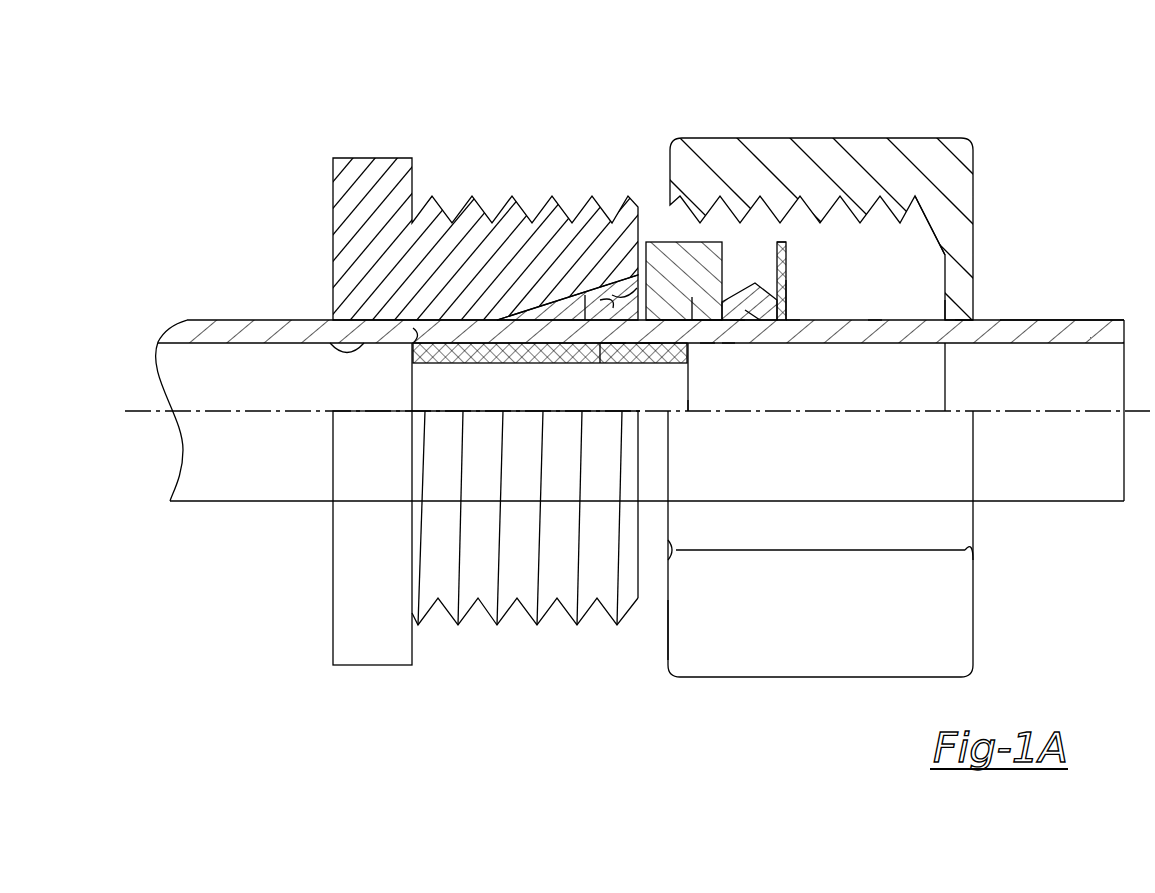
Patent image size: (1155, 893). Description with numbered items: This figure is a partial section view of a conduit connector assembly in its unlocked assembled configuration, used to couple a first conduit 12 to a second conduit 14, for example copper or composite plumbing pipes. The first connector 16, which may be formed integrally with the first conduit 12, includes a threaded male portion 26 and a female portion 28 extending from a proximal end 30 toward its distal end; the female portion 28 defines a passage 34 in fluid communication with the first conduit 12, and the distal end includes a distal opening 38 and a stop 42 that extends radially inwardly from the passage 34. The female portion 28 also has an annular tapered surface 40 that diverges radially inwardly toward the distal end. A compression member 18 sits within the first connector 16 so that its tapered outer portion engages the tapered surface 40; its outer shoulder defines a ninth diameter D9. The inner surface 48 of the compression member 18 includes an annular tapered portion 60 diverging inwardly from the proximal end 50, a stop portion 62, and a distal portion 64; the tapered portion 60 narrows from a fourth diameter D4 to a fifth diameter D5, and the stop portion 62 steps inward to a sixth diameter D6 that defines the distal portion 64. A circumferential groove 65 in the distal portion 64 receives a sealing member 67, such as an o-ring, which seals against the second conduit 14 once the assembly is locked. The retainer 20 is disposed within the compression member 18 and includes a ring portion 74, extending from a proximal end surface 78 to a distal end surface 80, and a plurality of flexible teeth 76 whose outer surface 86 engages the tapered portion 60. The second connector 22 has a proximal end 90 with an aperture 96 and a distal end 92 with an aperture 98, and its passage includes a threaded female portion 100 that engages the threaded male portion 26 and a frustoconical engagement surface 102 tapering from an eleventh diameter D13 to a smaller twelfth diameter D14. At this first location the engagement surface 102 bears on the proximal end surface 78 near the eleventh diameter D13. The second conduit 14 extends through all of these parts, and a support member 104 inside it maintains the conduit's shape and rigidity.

The first conduit 12 is at (318, 303).
The second conduit 14 is at (1044, 306).
The first connector 16 is at (454, 192).
The compression member 18 is at (586, 276).
The retainer 20 is at (790, 330).
The second connector 22 is at (908, 118).
The threaded male portion 26 is at (497, 628).
The female portion 28 is at (633, 287).
The proximal end 30 is at (648, 280).
The passage 34 is at (483, 346).
The distal opening 38 is at (352, 338).
The annular tapered surface 40 is at (560, 303).
The stop 42 is at (414, 338).
The inner surface 48 is at (600, 342).
The proximal end 50 is at (728, 344).
The annular tapered portion 60 is at (760, 330).
The stop portion 62 is at (707, 332).
The distal portion 64 is at (657, 332).
The circumferential groove 65 is at (627, 387).
The sealing member 67 is at (607, 388).
The ring portion 74 is at (790, 286).
The teeth 76 is at (762, 305).
The proximal end surface 78 is at (787, 296).
The distal end surface 80 is at (782, 268).
The outer surface 86 is at (785, 313).
The proximal end 90 is at (975, 609).
The distal end 92 is at (668, 644).
The aperture 96 is at (945, 345).
The aperture 98 is at (672, 230).
The threaded female portion 100 is at (902, 250).
The engagement surface 102 is at (950, 328).
The support member 104 is at (408, 413).
The fourth diameter D4 is at (745, 318).
The fifth diameter D5 is at (735, 330).
The sixth diameter D6 is at (700, 333).
The ninth diameter D9 is at (686, 312).
The eleventh diameter D13 is at (875, 312).
The twelfth diameter D14 is at (956, 332).